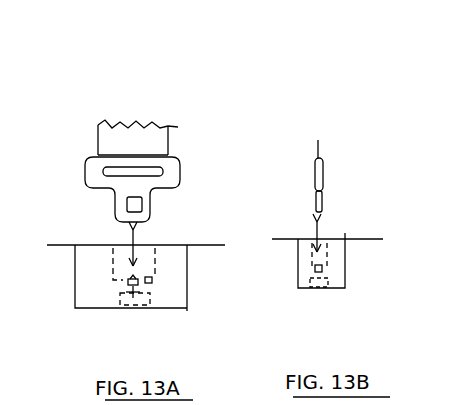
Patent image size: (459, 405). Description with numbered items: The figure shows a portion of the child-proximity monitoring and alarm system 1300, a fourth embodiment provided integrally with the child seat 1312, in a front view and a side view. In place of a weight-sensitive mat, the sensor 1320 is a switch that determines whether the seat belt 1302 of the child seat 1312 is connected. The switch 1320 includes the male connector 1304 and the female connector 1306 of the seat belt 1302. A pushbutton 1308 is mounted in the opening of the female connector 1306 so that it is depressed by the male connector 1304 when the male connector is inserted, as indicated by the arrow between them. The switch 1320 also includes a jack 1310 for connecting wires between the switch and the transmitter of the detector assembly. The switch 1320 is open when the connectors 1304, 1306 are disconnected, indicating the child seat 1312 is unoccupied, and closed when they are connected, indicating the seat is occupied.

In FIG. 13A, the child-proximity monitoring and alarm system 1300 is at (194, 58).
In FIG. 13B, the child-proximity monitoring and alarm system 1300 is at (361, 74).
In FIG. 13A, the seat belt 1302 is at (94, 124).
In FIG. 13B, the seat belt 1302 is at (326, 138).
In FIG. 13A, the male connector 1304 is at (151, 208).
In FIG. 13B, the male connector 1304 is at (313, 202).
In FIG. 13A, the female connector 1306 is at (148, 246).
In FIG. 13B, the female connector 1306 is at (312, 240).
In FIG. 13A, the pushbutton 1308 is at (147, 278).
In FIG. 13B, the pushbutton 1308 is at (310, 268).
In FIG. 13A, the jack 1310 is at (134, 311).
In FIG. 13B, the jack 1310 is at (318, 296).
In FIG. 13A, the child seat 1312 is at (66, 243).
In FIG. 13B, the child seat 1312 is at (365, 236).
In FIG. 13A, the sensor switch 1320 is at (99, 212).
In FIG. 13B, the sensor switch 1320 is at (335, 199).